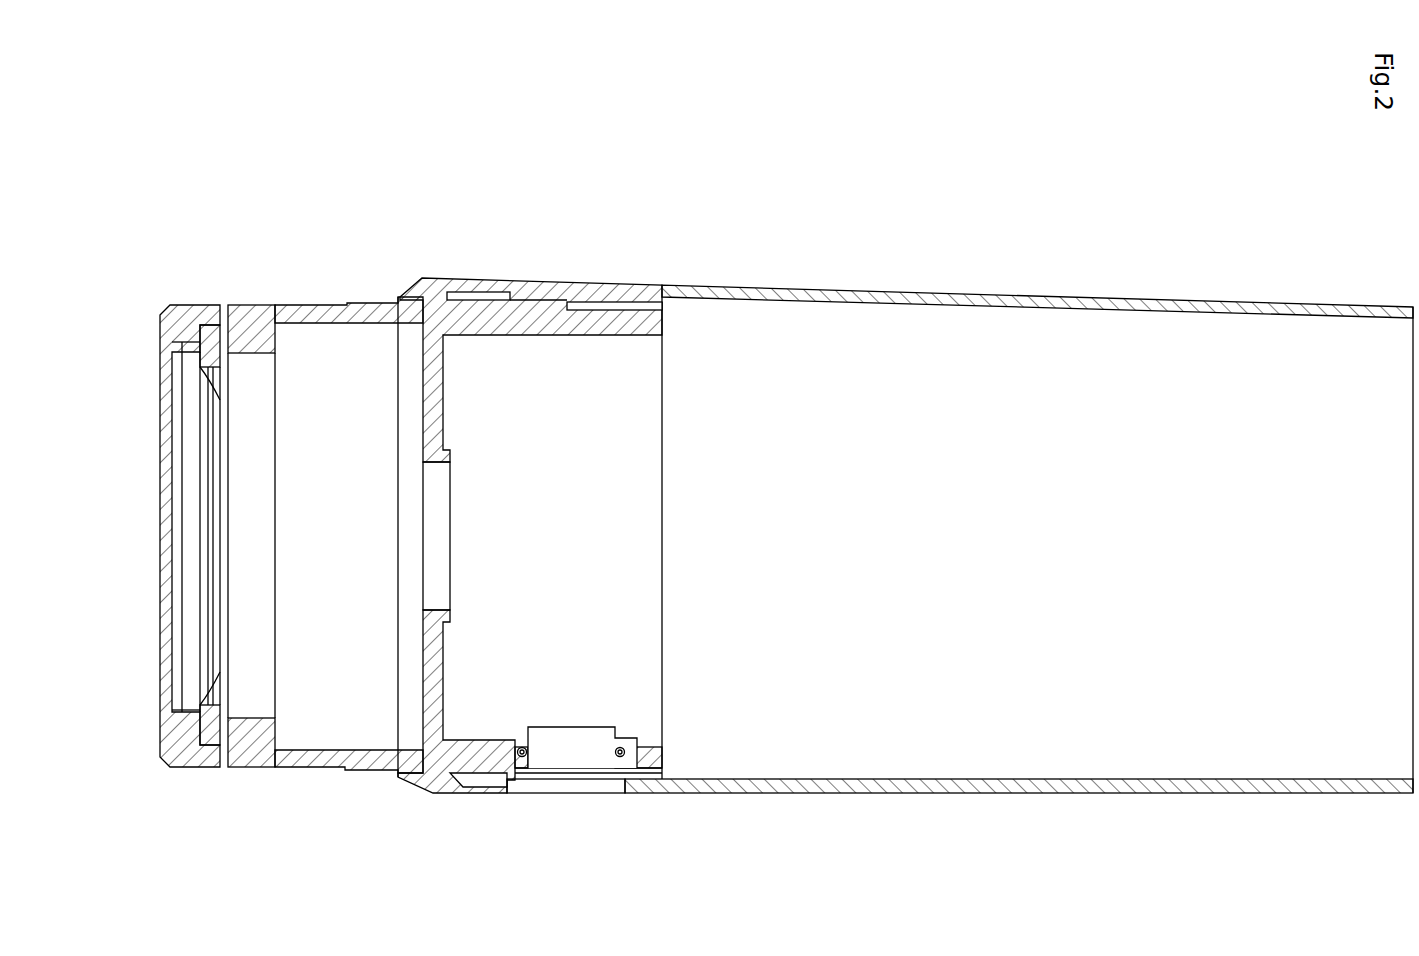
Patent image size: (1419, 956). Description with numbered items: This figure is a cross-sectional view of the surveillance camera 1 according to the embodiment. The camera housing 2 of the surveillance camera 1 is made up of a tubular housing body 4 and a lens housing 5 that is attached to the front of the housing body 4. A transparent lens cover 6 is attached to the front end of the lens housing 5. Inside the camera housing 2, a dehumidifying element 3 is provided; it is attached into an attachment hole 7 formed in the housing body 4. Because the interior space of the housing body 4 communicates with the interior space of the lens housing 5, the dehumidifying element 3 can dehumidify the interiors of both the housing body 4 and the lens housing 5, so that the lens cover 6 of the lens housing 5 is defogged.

The surveillance camera 1 is at (981, 132).
The camera housing 2 is at (949, 280).
The dehumidifying element 3 is at (572, 727).
The tubular housing body 4 is at (1032, 795).
The lens housing 5 is at (318, 769).
The transparent lens cover 6 is at (159, 537).
The attachment hole 7 is at (621, 745).